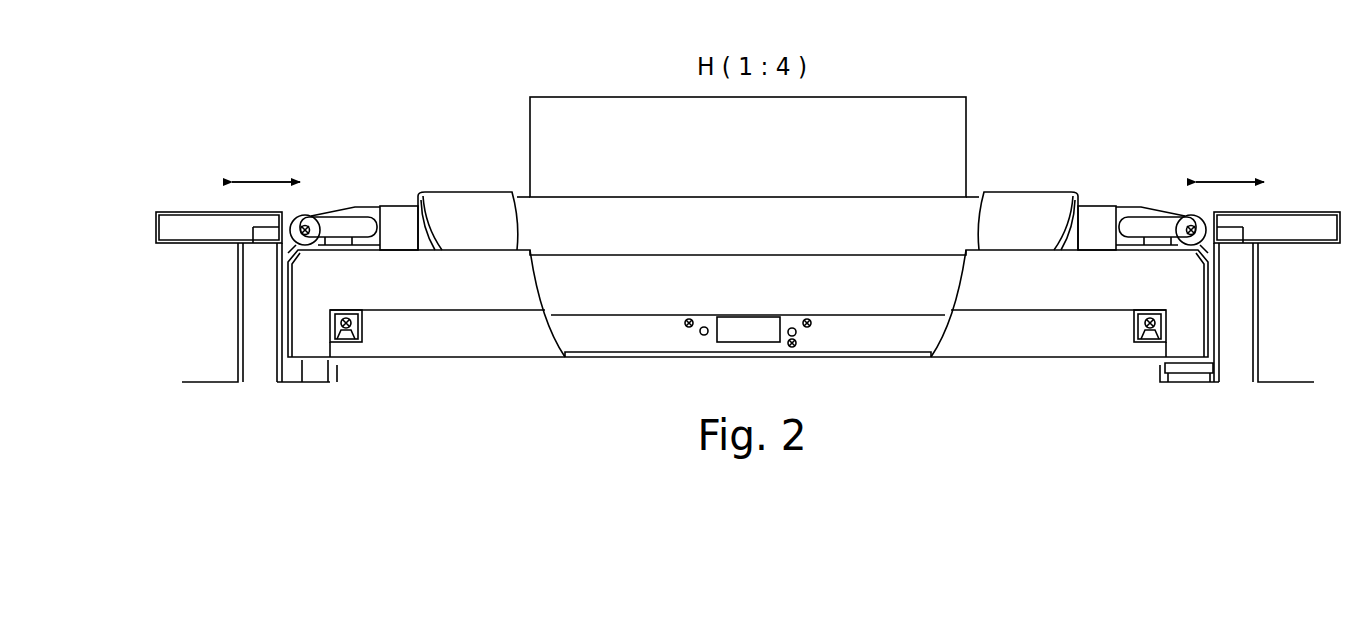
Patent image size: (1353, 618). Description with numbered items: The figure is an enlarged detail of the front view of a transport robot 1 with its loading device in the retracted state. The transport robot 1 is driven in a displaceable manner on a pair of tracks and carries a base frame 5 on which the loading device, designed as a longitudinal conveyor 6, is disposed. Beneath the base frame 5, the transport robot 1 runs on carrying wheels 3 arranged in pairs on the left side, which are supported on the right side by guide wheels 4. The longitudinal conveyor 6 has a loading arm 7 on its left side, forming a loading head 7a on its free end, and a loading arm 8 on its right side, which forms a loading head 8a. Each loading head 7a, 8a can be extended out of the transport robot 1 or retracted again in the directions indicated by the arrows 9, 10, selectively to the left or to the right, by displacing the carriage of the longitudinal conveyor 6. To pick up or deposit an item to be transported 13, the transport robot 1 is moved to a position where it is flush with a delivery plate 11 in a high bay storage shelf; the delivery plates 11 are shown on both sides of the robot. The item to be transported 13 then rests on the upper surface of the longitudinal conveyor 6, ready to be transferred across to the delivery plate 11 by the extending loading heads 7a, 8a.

The transport robot 1 is at (1070, 344).
The carrying wheels 3 is at (317, 373).
The guide wheels 4 is at (1187, 375).
The base frame 5 is at (493, 290).
The longitudinal conveyor 6 is at (410, 214).
The loading arm 7 is at (393, 230).
The loading head 7a is at (340, 225).
The loading arm 8 is at (1085, 222).
The loading head 8a is at (1143, 228).
The arrow 9 is at (250, 178).
The arrow 10 is at (283, 178).
The delivery plate 11 is at (188, 228).
The item to be transported 13 is at (602, 130).